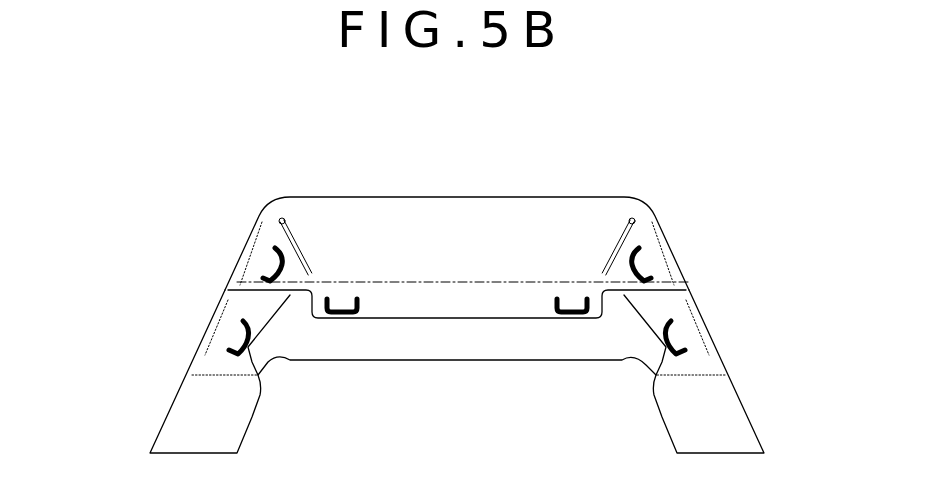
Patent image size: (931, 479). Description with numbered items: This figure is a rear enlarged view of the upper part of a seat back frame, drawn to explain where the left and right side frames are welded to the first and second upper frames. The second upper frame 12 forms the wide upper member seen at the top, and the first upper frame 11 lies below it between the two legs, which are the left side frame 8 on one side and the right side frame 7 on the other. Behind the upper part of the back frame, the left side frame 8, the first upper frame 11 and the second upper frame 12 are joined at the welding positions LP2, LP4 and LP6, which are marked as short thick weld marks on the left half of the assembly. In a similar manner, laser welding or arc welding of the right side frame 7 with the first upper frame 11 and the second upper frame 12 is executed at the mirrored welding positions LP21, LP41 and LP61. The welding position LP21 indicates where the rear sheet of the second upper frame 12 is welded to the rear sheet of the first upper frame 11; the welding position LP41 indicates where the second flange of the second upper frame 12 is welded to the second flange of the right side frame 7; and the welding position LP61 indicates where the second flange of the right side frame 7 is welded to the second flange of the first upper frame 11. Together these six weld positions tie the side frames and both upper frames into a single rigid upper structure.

The second upper frame 12 is at (470, 198).
The first upper frame 11 is at (388, 347).
The left side frame 8 is at (183, 415).
The right side frame 7 is at (722, 407).
The welding position LP2 is at (337, 298).
The welding position LP21 is at (571, 298).
The welding position LP4 is at (263, 280).
The welding position LP41 is at (652, 253).
The welding position LP6 is at (240, 329).
The welding position LP61 is at (689, 333).